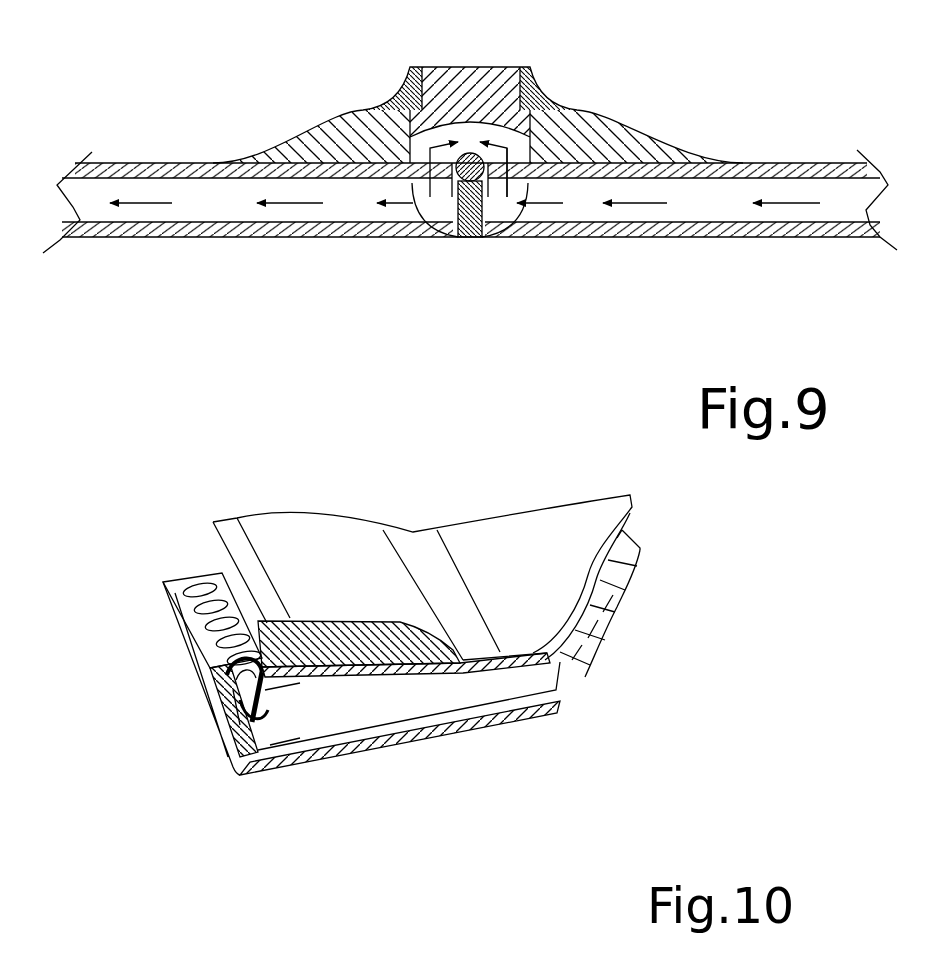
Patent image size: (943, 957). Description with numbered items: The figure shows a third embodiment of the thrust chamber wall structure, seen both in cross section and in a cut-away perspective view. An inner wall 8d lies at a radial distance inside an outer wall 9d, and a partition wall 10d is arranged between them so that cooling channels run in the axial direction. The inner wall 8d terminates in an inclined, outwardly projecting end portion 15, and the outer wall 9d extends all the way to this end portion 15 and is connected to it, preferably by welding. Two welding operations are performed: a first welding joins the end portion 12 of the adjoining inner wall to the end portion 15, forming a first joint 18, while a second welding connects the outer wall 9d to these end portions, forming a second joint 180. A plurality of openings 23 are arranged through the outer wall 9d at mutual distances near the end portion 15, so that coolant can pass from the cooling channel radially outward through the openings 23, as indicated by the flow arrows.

In FIG. 9, the second joint 180 is at (478, 152).
In FIG. 9, the outer wall 9d is at (783, 167).
In FIG. 10, the outer wall 9d is at (560, 660).
In FIG. 9, the inner wall 8d is at (647, 228).
In FIG. 10, the inner wall 8d is at (337, 748).
In FIG. 9, the first joint 18 is at (413, 237).
In FIG. 9, the end portion 12 is at (433, 237).
In FIG. 9, the end portion 15 is at (500, 237).
In FIG. 10, the end portion 15 is at (225, 750).
In FIG. 9, the openings 23 is at (513, 237).
In FIG. 10, the openings 23 is at (197, 588).
In FIG. 10, the partition wall 10d is at (400, 705).